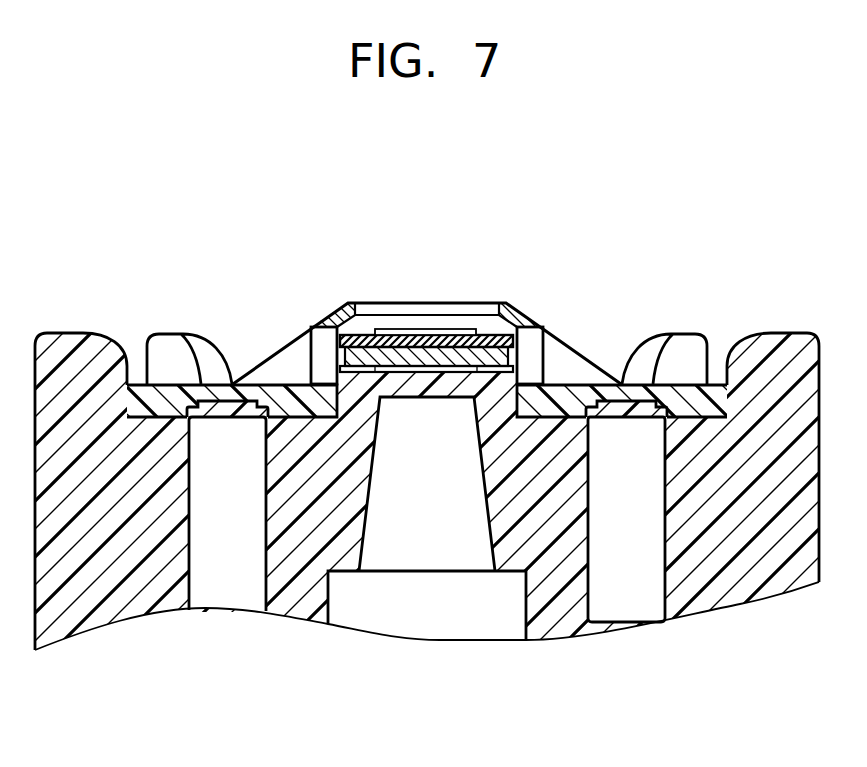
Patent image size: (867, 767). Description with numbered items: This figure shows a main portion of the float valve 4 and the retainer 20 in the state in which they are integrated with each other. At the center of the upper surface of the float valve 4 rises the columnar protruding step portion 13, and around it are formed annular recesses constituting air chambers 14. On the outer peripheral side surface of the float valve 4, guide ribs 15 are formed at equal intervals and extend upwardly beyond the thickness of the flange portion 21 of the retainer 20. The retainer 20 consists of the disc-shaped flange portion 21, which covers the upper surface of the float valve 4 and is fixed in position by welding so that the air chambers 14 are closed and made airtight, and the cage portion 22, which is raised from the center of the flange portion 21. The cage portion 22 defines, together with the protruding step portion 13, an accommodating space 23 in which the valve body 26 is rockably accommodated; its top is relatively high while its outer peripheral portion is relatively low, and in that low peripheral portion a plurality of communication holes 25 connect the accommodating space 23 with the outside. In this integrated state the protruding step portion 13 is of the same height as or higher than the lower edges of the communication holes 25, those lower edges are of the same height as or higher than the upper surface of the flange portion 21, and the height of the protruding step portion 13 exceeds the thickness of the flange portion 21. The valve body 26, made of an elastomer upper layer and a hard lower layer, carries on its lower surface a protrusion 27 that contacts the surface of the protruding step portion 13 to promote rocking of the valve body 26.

The float valve 4 is at (127, 560).
The protruding step portion 13 is at (458, 372).
The air chambers 14 is at (227, 577).
The guide ribs 15 is at (167, 345).
The retainer 20 is at (427, 256).
The flange portion 21 is at (685, 390).
The cage portion 22 is at (338, 316).
The accommodating space 23 is at (420, 312).
The communication holes 25 is at (317, 357).
The valve body 26 is at (372, 333).
The protrusion 27 is at (433, 368).